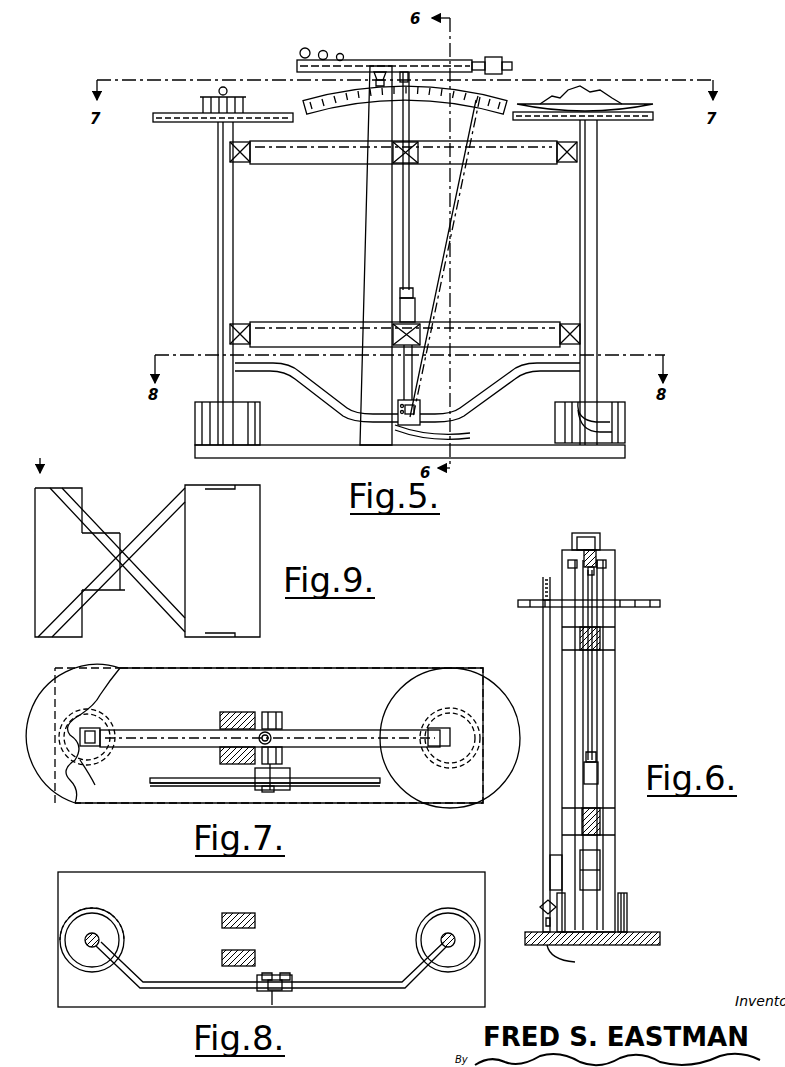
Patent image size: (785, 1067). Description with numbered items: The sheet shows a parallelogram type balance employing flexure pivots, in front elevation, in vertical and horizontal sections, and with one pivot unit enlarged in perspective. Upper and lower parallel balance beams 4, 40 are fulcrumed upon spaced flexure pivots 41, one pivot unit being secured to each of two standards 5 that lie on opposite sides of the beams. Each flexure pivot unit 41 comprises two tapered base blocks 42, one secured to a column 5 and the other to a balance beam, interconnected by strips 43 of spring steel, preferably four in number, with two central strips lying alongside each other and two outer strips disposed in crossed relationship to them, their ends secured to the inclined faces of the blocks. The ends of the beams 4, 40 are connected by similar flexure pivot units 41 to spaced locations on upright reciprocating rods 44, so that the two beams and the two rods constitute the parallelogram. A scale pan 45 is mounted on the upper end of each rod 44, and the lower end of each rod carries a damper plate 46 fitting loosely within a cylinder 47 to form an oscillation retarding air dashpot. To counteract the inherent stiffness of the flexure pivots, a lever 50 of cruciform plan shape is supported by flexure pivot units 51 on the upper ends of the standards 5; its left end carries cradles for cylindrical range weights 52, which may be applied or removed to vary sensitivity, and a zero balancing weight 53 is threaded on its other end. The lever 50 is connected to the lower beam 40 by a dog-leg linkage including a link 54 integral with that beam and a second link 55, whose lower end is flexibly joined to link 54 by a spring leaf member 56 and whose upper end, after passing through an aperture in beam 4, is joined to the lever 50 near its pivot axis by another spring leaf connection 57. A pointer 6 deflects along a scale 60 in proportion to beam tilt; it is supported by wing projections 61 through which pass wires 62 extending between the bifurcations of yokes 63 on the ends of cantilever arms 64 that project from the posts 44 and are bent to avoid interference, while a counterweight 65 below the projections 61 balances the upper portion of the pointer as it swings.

In FIG. 5, the upper balance beam 4 is at (498, 162).
In FIG. 7, the upper balance beam 4 is at (305, 735).
In FIG. 6, the upper balance beam 4 is at (600, 636).
In FIG. 5, the standard 5 is at (376, 209).
In FIG. 7, the standard 5 is at (220, 712).
In FIG. 8, the standard 5 is at (235, 913).
In FIG. 6, the standard 5 is at (610, 858).
In FIG. 5, the pointer 6 is at (400, 99).
In FIG. 7, the pointer 6 is at (272, 792).
In FIG. 8, the pointer 6 is at (275, 1005).
In FIG. 6, the pointer 6 is at (543, 620).
In FIG. 5, the lower balance beam 40 is at (505, 322).
In FIG. 6, the lower balance beam 40 is at (600, 820).
In FIG. 5, the flexure pivot unit 41 is at (240, 162).
In FIG. 9, the flexure pivot unit 41 is at (42, 455).
In FIG. 7, the flexure pivot unit 41 is at (275, 712).
In FIG. 9, the tapered base block 42 is at (147, 561).
In FIG. 9, the spring steel strip 43 is at (76, 488).
In FIG. 5, the upright reciprocating rod 44 is at (218, 238).
In FIG. 7, the upright reciprocating rod 44 is at (108, 730).
In FIG. 8, the upright reciprocating rod 44 is at (100, 940).
In FIG. 6, the upright reciprocating rod 44 is at (592, 878).
In FIG. 5, the scale pan 45 is at (182, 124).
In FIG. 7, the scale pan 45 is at (273, 736).
In FIG. 6, the scale pan 45 is at (662, 603).
In FIG. 5, the damper plate 46 is at (612, 428).
In FIG. 7, the damper plate 46 is at (94, 780).
In FIG. 8, the damper plate 46 is at (78, 925).
In FIG. 5, the cylinder 47 is at (202, 420).
In FIG. 7, the cylinder 47 is at (100, 728).
In FIG. 8, the cylinder 47 is at (108, 920).
In FIG. 6, the cylinder 47 is at (628, 903).
In FIG. 5, the lever 50 is at (409, 45).
In FIG. 6, the lever 50 is at (596, 556).
In FIG. 5, the flexure pivot unit 51 is at (378, 70).
In FIG. 6, the flexure pivot unit 51 is at (568, 562).
In FIG. 5, the range weight 52 is at (332, 53).
In FIG. 6, the range weight 52 is at (594, 533).
In FIG. 5, the zero balancing weight 53 is at (496, 57).
In FIG. 5, the link 54 is at (412, 294).
In FIG. 6, the link 54 is at (592, 782).
In FIG. 5, the second link 55 is at (410, 172).
In FIG. 7, the second link 55 is at (272, 740).
In FIG. 6, the second link 55 is at (592, 686).
In FIG. 5, the spring leaf member 56 is at (412, 264).
In FIG. 6, the spring leaf member 56 is at (595, 757).
In FIG. 5, the spring leaf connection 57 is at (410, 74).
In FIG. 6, the spring leaf connection 57 is at (594, 570).
In FIG. 5, the scale 60 is at (500, 110).
In FIG. 7, the scale 60 is at (368, 782).
In FIG. 6, the scale 60 is at (548, 578).
In FIG. 5, the wing projection 61 is at (418, 421).
In FIG. 8, the wing projection 61 is at (285, 992).
In FIG. 8, the wire 62 is at (272, 973).
In FIG. 5, the yoke 63 is at (428, 418).
In FIG. 7, the yoke 63 is at (258, 790).
In FIG. 8, the yoke 63 is at (258, 990).
In FIG. 6, the yoke 63 is at (548, 905).
In FIG. 5, the cantilever arm 64 is at (320, 404).
In FIG. 7, the cantilever arm 64 is at (150, 783).
In FIG. 8, the cantilever arm 64 is at (175, 982).
In FIG. 6, the cantilever arm 64 is at (560, 858).
In FIG. 5, the counterweight 65 is at (456, 436).
In FIG. 7, the counterweight 65 is at (278, 792).
In FIG. 6, the counterweight 65 is at (573, 958).